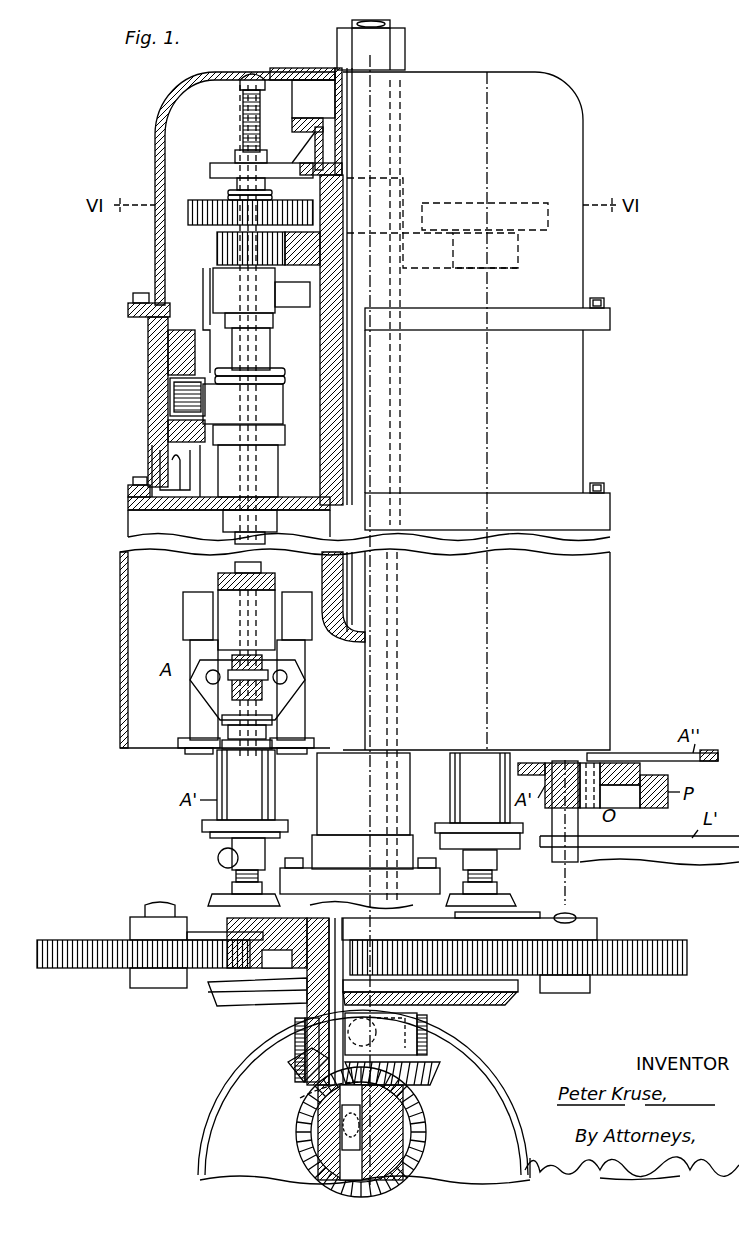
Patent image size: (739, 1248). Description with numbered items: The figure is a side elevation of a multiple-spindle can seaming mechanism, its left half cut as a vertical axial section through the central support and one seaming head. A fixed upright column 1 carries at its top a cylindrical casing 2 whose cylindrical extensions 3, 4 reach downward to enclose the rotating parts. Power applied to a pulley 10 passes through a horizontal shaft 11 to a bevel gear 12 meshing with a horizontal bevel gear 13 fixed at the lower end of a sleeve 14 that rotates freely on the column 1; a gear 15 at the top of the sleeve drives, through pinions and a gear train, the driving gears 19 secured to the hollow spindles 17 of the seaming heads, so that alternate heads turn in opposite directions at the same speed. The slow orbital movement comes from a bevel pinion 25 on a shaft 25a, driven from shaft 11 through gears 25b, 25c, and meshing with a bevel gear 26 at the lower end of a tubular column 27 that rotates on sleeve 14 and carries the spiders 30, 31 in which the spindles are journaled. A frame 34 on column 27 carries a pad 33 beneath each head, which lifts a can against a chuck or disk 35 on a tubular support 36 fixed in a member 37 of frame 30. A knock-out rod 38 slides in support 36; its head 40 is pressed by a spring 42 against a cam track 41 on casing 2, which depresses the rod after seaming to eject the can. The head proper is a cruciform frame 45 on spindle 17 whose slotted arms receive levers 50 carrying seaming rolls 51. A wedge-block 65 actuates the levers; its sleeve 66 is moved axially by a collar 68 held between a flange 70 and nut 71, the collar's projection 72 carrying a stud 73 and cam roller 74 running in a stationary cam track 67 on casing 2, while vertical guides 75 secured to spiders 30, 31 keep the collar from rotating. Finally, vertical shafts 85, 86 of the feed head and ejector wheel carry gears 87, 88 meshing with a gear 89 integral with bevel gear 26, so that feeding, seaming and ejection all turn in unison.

The fixed upright column 1 is at (473, 385).
The frame or casing 2 is at (155, 237).
The cylindrical extension 3 is at (148, 397).
The cylindrical extension 4 is at (120, 628).
The pulley 10 is at (204, 1135).
The horizontal shaft 11 is at (318, 1132).
The bevel gear 12 is at (418, 1140).
The horizontal bevel gear 13 is at (440, 1074).
The sleeve 14 is at (335, 352).
The gear 15 is at (300, 258).
The driving spindle 17 is at (232, 340).
The driving gear 19 is at (190, 206).
The bevel pinion 25 is at (399, 1034).
The shaft 25a is at (440, 1062).
The gear 25b is at (300, 1095).
The gear 25c is at (295, 1045).
The bevel gear 26 is at (500, 1006).
The tubular column 27 is at (320, 392).
The spindle-supporting frame or spider 30 is at (213, 280).
The spindle-supporting frame or spider 31 is at (283, 497).
The pad 33 is at (232, 836).
The frame 34 is at (524, 920).
The chuck or disk 35 is at (232, 749).
The tubular support 36 is at (272, 192).
The member 37 is at (210, 168).
The knock-out rod 38 is at (266, 712).
The rigid head 40 is at (262, 76).
The cam track 41 is at (252, 72).
The spring 42 is at (260, 126).
The cruciform frame 45 is at (247, 687).
The lever 50 is at (190, 632).
The seaming roll 51 is at (185, 750).
The wedge-block 65 is at (225, 615).
The sleeve 66 is at (223, 520).
The annular cam track 67 is at (168, 365).
The collar 68 is at (283, 394).
The flange 70 is at (285, 433).
The nut 71 is at (285, 368).
The radially-outward projection 72 is at (168, 433).
The stud 73 is at (168, 408).
The cam roller 74 is at (150, 345).
The vertical guides 75 is at (203, 330).
The vertical driving shaft 85 is at (574, 915).
The vertical driving shaft 86 is at (165, 903).
The gear 87 is at (635, 948).
The gear 88 is at (82, 940).
The gear 89 is at (470, 958).